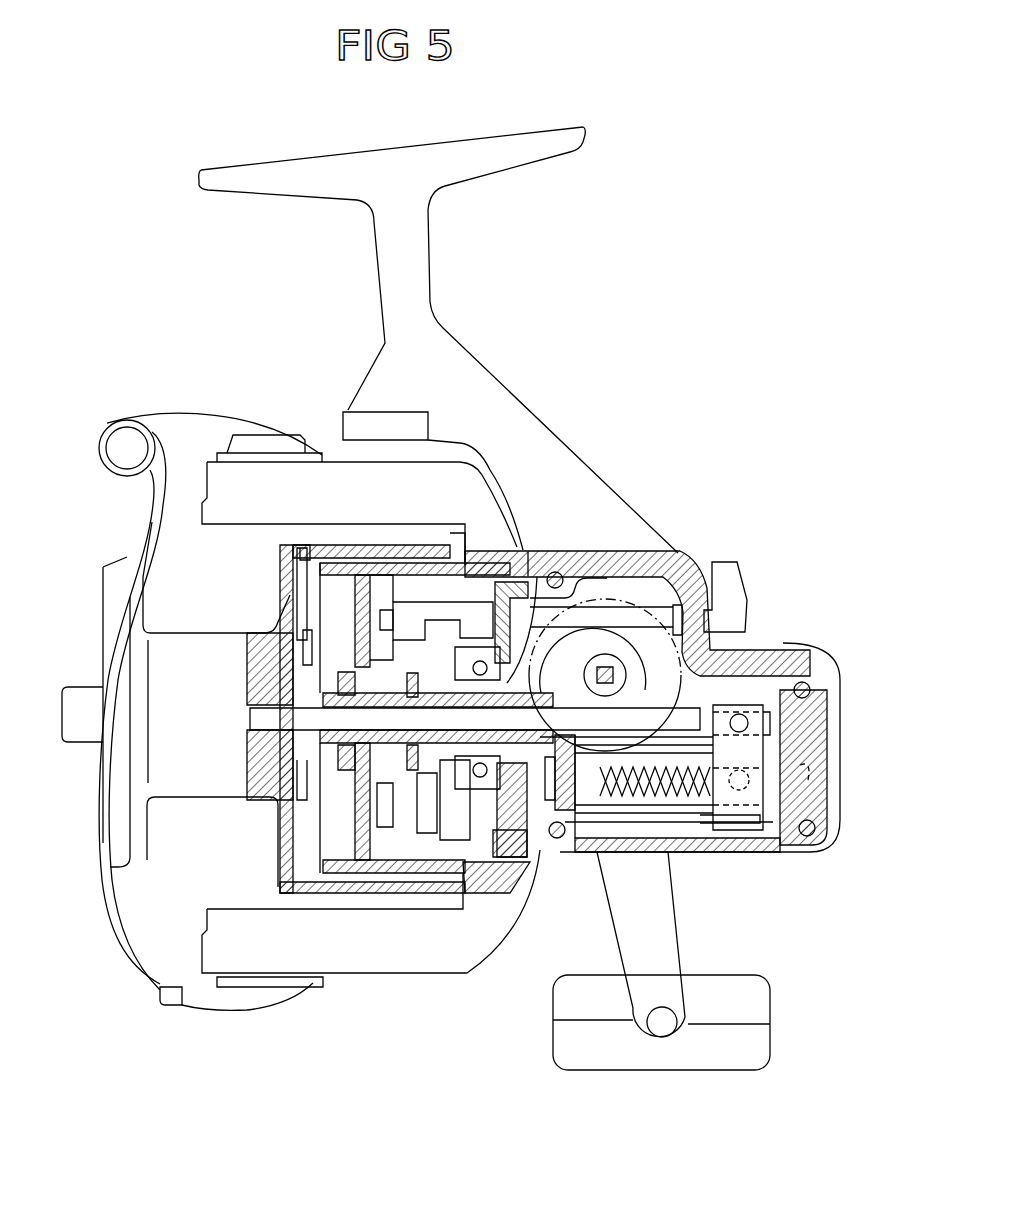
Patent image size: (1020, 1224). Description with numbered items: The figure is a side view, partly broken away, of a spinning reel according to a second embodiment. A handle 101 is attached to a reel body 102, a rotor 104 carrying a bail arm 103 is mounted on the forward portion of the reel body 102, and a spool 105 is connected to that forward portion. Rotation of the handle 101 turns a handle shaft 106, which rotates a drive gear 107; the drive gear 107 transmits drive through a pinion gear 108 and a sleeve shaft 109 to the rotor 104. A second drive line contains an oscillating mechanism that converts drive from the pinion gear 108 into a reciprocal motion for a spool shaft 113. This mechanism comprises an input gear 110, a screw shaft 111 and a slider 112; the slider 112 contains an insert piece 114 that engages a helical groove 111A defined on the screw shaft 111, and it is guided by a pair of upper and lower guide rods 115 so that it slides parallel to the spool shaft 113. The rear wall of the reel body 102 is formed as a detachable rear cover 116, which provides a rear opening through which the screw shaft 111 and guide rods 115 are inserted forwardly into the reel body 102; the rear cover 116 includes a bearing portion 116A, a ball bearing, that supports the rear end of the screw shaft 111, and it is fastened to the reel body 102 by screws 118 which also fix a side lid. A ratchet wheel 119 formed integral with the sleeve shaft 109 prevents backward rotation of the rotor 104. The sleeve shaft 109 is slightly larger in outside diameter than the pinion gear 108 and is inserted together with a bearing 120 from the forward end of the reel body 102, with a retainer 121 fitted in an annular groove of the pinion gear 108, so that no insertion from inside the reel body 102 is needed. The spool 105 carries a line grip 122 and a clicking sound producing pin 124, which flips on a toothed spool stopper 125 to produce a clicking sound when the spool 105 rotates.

The handle 101 is at (672, 963).
The reel body 102 is at (676, 560).
The bail arm 103 is at (130, 933).
The rotor 104 is at (388, 965).
The spool 105 is at (190, 790).
The handle shaft 106 is at (695, 558).
The drive gear 107 is at (607, 598).
The pinion gear 108 is at (587, 600).
The sleeve shaft 109 is at (297, 832).
The input gear 110 is at (542, 852).
The screw shaft 111 is at (596, 788).
The helical groove 111A is at (664, 784).
The slider 112 is at (745, 700).
The spool shaft 113 is at (765, 725).
The insert piece 114 is at (772, 847).
The guide rods 115 is at (735, 650).
The rear cover 116 is at (815, 680).
The bearing portion 116A is at (808, 768).
The screws 118 is at (568, 556).
The ratchet wheel 119 is at (440, 663).
The bearing 120 is at (481, 785).
The retainer 121 is at (532, 557).
The line grip 122 is at (293, 547).
The clicking sound producing pin 124 is at (307, 650).
The spool stopper 125 is at (263, 800).